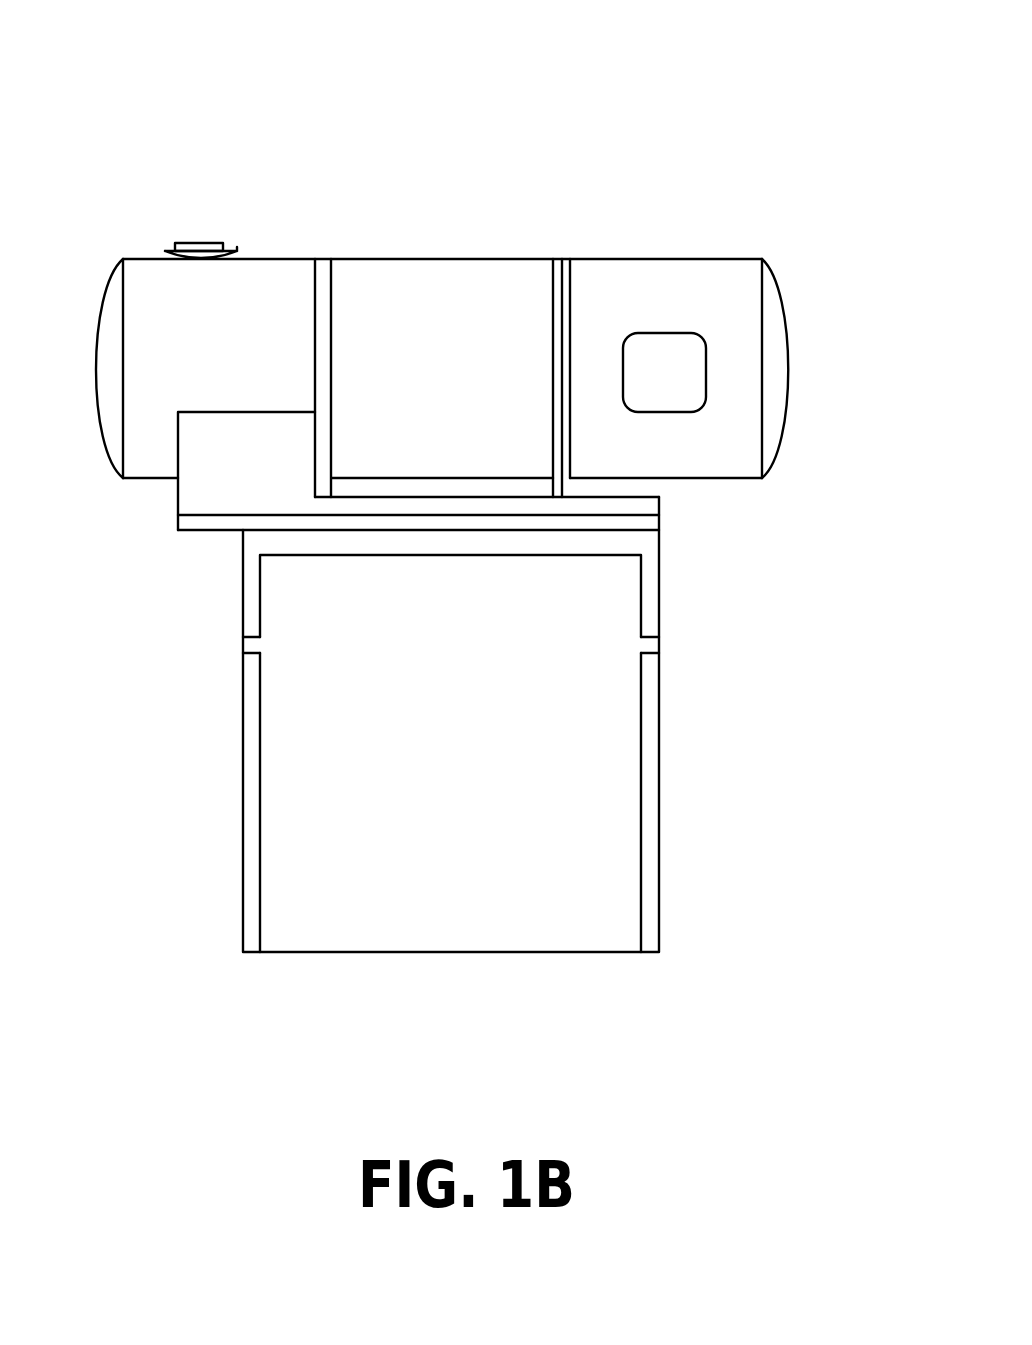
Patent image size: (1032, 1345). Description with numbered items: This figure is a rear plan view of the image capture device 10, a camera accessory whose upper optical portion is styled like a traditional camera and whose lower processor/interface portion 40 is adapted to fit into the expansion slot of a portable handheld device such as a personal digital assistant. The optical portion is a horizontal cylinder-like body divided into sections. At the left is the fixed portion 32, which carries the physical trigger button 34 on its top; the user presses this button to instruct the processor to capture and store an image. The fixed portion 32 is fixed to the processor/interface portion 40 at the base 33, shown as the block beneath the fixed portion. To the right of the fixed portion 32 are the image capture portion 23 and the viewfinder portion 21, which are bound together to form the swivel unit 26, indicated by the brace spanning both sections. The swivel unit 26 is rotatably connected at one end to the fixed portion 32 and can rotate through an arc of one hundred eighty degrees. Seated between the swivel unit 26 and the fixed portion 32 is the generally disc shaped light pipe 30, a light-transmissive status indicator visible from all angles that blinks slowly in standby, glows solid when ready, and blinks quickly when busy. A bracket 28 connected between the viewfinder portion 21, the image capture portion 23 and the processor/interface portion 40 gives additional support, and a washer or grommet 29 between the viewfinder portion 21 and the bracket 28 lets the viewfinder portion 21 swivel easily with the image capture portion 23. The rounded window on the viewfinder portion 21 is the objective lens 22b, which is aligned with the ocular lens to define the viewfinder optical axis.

The image capture device 10 is at (210, 102).
The viewfinder portion 21 is at (740, 307).
The objective lens 22b is at (706, 392).
The image capture portion 23 is at (449, 374).
The swivel unit 26 is at (785, 130).
The bracket 28 is at (557, 259).
The washer or grommet 29 is at (567, 259).
The light pipe 30 is at (317, 259).
The fixed portion 32 is at (225, 369).
The base 33 is at (274, 476).
The trigger button 34 is at (167, 251).
The processor/interface portion 40 is at (464, 754).